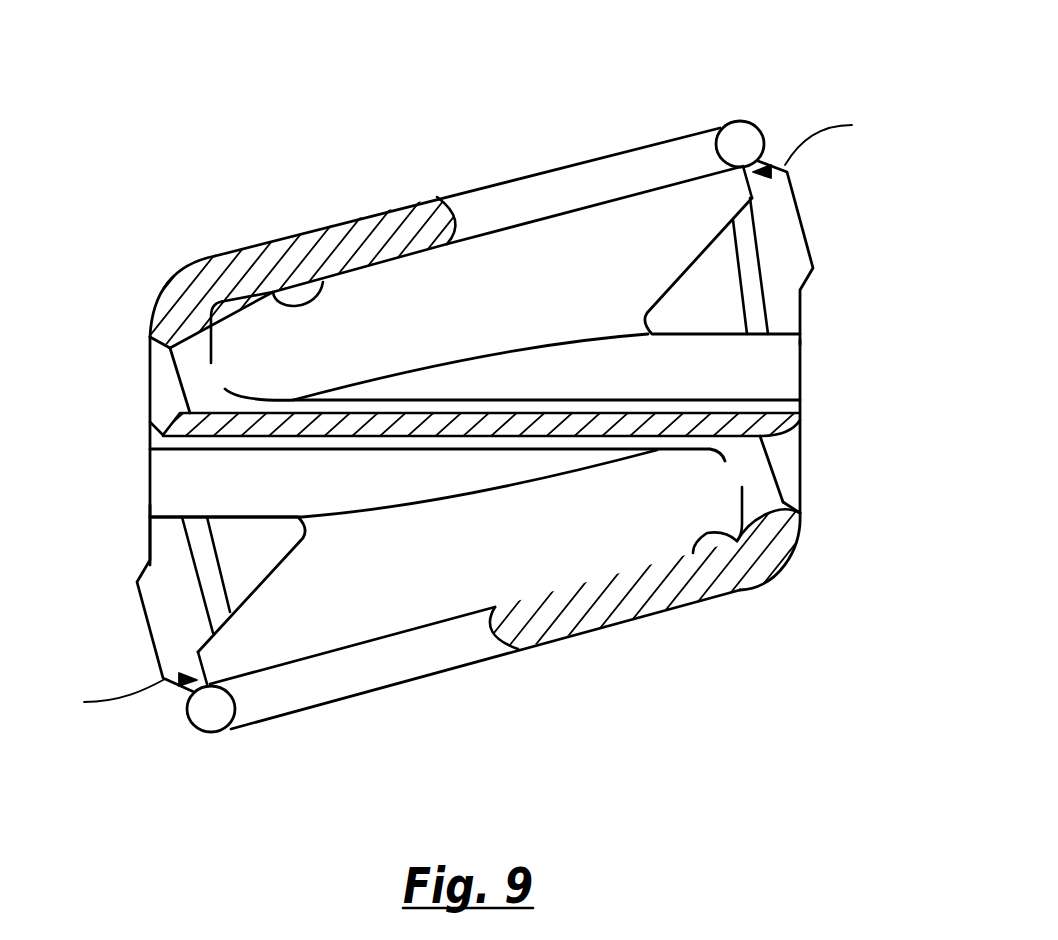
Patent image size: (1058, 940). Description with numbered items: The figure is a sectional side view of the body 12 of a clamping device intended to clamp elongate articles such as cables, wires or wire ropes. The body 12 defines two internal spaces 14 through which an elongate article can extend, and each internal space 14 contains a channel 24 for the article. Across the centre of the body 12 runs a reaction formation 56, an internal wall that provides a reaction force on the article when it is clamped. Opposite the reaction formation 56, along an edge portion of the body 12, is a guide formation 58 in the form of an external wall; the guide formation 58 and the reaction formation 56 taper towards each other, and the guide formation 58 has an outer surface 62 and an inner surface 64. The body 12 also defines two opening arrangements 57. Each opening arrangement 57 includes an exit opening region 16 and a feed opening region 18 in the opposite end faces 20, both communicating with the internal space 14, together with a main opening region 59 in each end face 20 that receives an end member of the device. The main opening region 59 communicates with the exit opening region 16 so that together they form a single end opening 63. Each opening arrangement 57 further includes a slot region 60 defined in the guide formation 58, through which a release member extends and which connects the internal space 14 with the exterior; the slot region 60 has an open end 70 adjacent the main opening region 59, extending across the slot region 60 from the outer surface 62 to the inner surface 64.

The body 12 is at (637, 593).
The internal space 14 is at (497, 287).
The exit opening region 16 is at (787, 360).
The feed opening region 18 is at (790, 467).
The end face 20 is at (802, 317).
The channel 24 is at (420, 413).
The reaction formation 56 is at (585, 413).
The opening arrangement 57 is at (468, 412).
The guide formation 58 is at (310, 247).
The main opening region 59 is at (755, 217).
The slot region 60 is at (647, 158).
The outer surface 62 is at (387, 213).
The end opening 63 is at (763, 270).
The inner surface 64 is at (273, 292).
The open end 70 is at (737, 140).